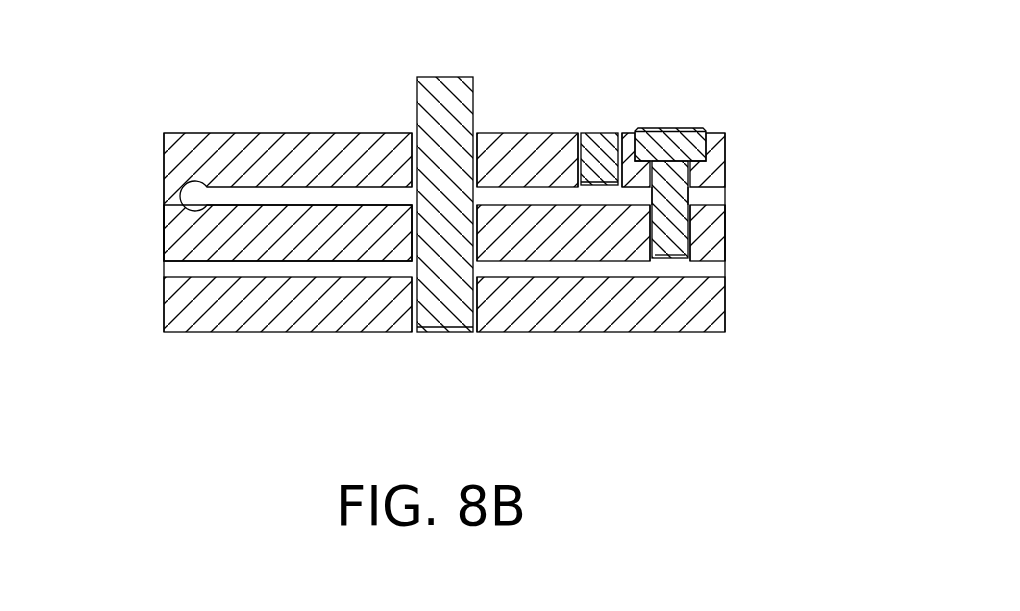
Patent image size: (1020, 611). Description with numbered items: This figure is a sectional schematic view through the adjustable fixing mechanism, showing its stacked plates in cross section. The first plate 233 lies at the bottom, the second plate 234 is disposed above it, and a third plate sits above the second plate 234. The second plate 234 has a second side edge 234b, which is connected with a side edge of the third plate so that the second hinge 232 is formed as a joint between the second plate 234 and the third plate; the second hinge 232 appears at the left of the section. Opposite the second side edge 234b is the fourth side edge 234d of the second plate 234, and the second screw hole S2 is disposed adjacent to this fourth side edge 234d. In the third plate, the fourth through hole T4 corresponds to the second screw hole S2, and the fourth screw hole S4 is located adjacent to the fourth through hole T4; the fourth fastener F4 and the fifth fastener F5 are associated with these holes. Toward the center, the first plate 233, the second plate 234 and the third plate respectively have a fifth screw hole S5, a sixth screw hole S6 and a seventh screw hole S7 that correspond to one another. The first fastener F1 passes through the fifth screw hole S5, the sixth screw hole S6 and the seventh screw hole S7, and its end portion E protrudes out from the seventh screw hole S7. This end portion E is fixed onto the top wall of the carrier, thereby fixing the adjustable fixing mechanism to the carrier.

The second hinge 232 is at (170, 197).
The first plate 233 is at (348, 307).
The second plate 234 is at (264, 240).
The second side edge 234b is at (162, 241).
The fourth side edge 234d is at (727, 233).
The end portion E is at (447, 100).
The first fastener F1 is at (446, 312).
The fourth fastener F4 is at (683, 198).
The fifth fastener F5 is at (597, 148).
The second screw hole S2 is at (650, 237).
The fourth screw hole S4 is at (580, 160).
The fifth screw hole S5 is at (473, 300).
The sixth screw hole S6 is at (417, 227).
The seventh screw hole S7 is at (417, 167).
The fourth through hole T4 is at (692, 179).